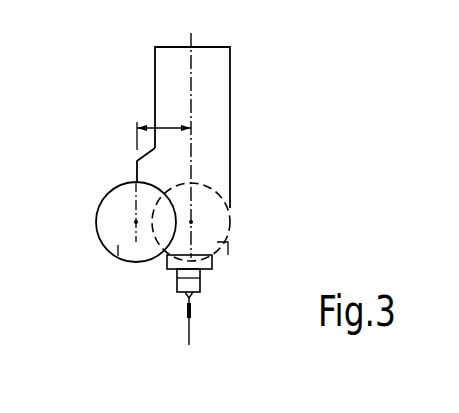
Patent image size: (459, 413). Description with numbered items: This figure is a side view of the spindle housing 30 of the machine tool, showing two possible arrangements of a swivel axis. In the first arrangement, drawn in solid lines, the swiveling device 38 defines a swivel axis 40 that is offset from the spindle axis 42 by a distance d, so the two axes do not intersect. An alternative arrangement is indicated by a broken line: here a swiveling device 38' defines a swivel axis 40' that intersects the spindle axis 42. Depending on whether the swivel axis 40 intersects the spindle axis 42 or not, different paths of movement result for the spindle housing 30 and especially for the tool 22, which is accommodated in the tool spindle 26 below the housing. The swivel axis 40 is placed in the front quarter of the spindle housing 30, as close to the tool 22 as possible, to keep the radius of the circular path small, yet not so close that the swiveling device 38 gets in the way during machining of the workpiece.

The spindle housing 30 is at (210, 77).
The swiveling device 38 is at (112, 255).
The swiveling device 38' is at (236, 222).
The swivel axis 40 is at (74, 212).
The swivel axis 40' is at (256, 182).
The tool spindle 26 is at (200, 279).
The tool 22 is at (193, 310).
The spindle axis 42 is at (188, 343).